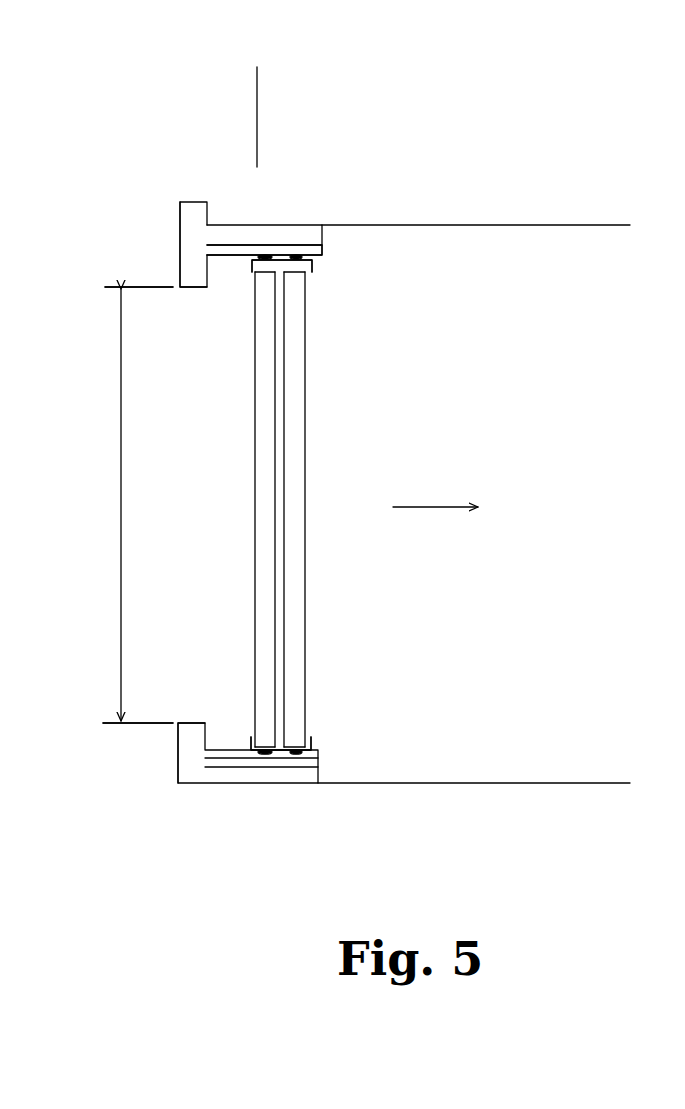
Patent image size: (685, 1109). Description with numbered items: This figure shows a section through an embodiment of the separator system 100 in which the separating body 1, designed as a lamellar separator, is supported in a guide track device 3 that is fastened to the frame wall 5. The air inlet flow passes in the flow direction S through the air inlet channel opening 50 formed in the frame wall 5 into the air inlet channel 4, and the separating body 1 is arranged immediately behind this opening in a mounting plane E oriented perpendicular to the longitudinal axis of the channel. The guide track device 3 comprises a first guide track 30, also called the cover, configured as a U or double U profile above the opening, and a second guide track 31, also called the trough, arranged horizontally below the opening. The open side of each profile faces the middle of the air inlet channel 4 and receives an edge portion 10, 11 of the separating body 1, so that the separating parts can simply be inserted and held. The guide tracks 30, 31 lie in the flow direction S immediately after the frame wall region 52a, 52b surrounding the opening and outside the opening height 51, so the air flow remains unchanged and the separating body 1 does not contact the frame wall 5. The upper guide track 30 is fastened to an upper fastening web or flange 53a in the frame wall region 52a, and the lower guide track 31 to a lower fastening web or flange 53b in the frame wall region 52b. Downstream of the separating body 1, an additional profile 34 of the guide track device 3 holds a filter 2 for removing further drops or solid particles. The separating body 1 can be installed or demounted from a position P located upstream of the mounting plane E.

The separating body 1 is at (250, 402).
The filter 2 is at (312, 468).
The guide track device 3 is at (313, 741).
The air inlet channel 4 is at (562, 493).
The frame wall 5 is at (247, 189).
The edge portion 10 is at (247, 285).
The edge portion 11 is at (253, 727).
The first guide track 30 is at (268, 257).
The second guide track 31 is at (257, 752).
The additional profile 34 is at (312, 262).
The air inlet channel opening 50 is at (253, 813).
The opening height 51 is at (121, 560).
The frame wall region 52a is at (195, 277).
The frame wall region 52b is at (195, 742).
The upper fastening web or flange 53a is at (258, 256).
The lower fastening web or flange 53b is at (294, 753).
The separator system 100 is at (325, 292).
The position P is at (75, 481).
The flow direction S is at (433, 508).
The mounting plane E is at (259, 118).